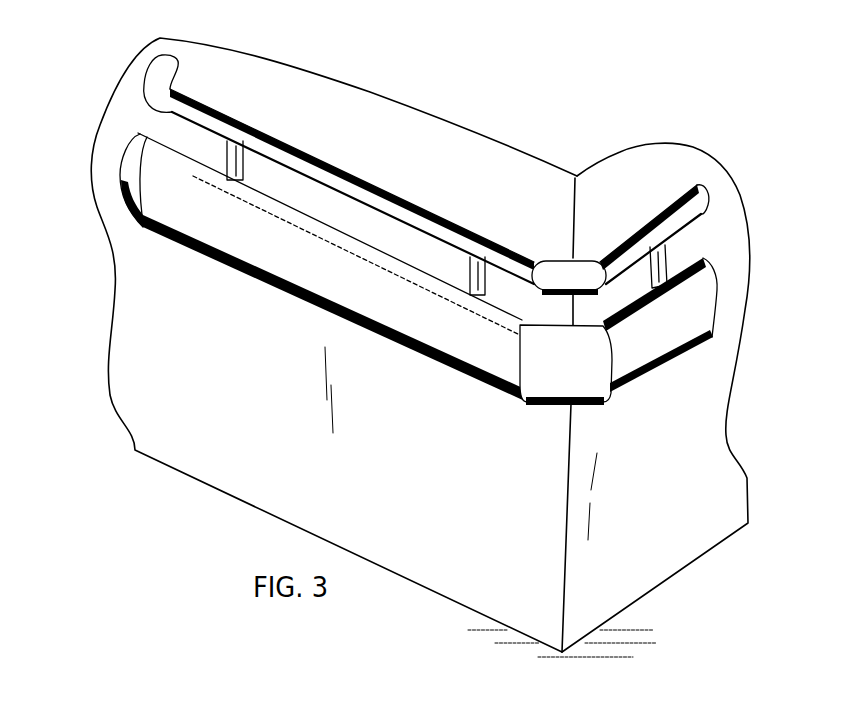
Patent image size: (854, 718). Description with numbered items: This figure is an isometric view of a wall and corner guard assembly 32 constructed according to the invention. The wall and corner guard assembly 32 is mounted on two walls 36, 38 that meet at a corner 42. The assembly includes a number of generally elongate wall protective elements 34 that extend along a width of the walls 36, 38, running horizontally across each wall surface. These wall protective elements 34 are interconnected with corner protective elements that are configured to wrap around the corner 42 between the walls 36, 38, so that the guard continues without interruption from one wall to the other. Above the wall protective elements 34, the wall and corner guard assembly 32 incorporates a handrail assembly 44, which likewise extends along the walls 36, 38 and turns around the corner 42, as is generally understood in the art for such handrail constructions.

The wall and corner guard assembly 32 is at (391, 235).
The wall protective elements 34 is at (128, 166).
The wall 36 is at (420, 134).
The wall 38 is at (663, 165).
The corner 42 is at (578, 213).
The handrail assembly 44 is at (320, 136).